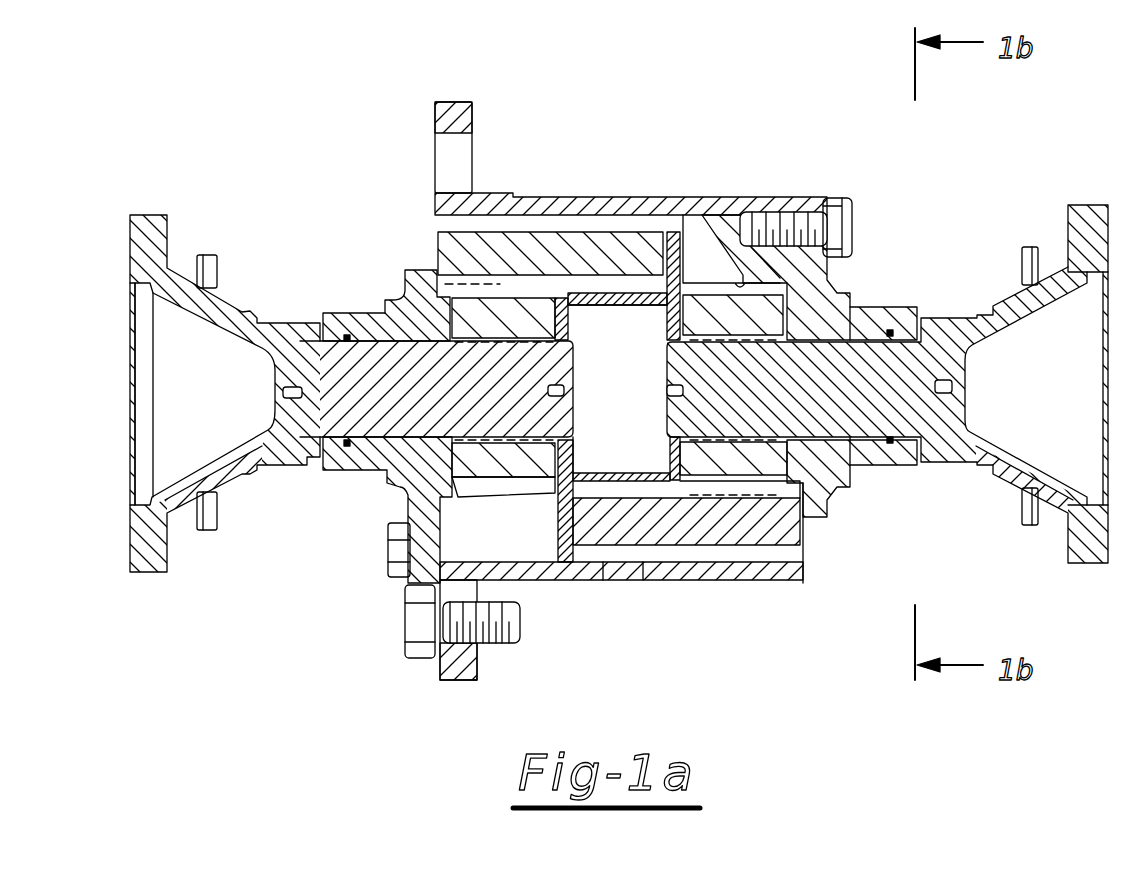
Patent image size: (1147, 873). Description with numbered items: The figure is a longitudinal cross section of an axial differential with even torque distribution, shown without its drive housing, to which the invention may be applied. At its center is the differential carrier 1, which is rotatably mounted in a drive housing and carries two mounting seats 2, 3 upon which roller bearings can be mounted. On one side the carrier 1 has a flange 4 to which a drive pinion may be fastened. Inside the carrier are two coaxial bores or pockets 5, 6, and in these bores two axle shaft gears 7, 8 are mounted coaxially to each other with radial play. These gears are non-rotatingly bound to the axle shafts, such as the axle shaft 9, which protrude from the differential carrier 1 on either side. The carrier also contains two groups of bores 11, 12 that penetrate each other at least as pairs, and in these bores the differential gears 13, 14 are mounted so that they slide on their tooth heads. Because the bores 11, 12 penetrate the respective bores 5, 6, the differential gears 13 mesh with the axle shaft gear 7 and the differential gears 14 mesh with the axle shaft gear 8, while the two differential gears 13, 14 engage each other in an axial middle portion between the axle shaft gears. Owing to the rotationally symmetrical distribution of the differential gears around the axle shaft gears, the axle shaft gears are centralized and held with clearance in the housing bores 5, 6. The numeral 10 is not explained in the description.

The differential carrier 1 is at (713, 243).
The mounting seat 2 is at (878, 308).
The mounting seat 3 is at (353, 313).
The flange 4 is at (477, 128).
The coaxial bore 5 is at (741, 278).
The coaxial bore 6 is at (509, 288).
The axle shaft gear 7 is at (762, 320).
The axle shaft gear 8 is at (530, 325).
The axle shaft 9 is at (892, 377).
The hub 10 is at (300, 348).
The bore group 11 is at (725, 553).
The bore group 12 is at (577, 222).
The differential gear 13 is at (782, 527).
The differential gear 14 is at (623, 250).